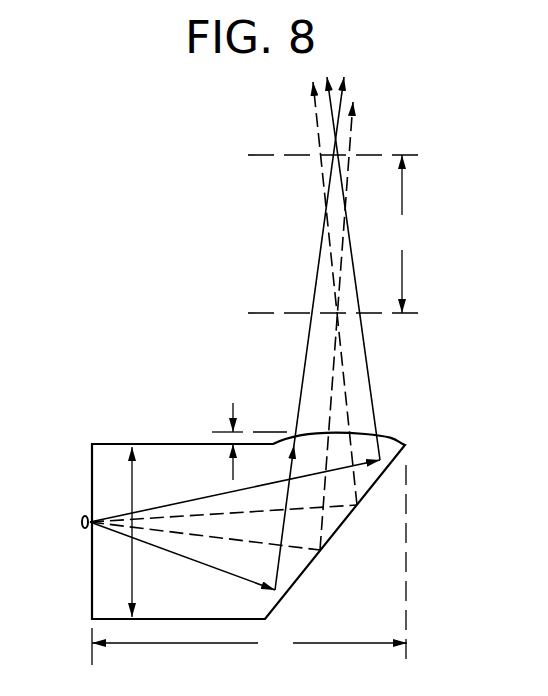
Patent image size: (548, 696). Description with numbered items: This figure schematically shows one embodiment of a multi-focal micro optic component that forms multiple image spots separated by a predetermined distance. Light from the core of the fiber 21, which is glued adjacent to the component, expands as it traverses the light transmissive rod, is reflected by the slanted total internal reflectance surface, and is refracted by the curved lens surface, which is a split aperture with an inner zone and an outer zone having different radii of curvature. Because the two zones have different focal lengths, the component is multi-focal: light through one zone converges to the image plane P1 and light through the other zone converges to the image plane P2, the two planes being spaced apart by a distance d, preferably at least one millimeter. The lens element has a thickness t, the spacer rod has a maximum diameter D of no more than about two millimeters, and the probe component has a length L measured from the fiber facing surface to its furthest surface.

The fiber 21 is at (80, 521).
The image plane P1 is at (359, 316).
The image plane P2 is at (359, 163).
The distance d is at (402, 234).
The thickness t is at (233, 403).
The maximum diameter D is at (132, 480).
The length L is at (249, 566).